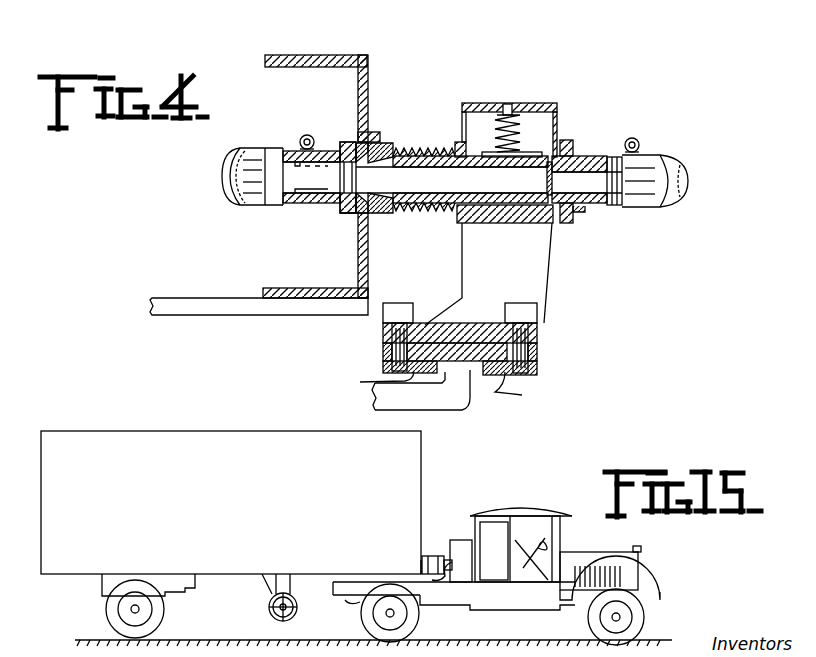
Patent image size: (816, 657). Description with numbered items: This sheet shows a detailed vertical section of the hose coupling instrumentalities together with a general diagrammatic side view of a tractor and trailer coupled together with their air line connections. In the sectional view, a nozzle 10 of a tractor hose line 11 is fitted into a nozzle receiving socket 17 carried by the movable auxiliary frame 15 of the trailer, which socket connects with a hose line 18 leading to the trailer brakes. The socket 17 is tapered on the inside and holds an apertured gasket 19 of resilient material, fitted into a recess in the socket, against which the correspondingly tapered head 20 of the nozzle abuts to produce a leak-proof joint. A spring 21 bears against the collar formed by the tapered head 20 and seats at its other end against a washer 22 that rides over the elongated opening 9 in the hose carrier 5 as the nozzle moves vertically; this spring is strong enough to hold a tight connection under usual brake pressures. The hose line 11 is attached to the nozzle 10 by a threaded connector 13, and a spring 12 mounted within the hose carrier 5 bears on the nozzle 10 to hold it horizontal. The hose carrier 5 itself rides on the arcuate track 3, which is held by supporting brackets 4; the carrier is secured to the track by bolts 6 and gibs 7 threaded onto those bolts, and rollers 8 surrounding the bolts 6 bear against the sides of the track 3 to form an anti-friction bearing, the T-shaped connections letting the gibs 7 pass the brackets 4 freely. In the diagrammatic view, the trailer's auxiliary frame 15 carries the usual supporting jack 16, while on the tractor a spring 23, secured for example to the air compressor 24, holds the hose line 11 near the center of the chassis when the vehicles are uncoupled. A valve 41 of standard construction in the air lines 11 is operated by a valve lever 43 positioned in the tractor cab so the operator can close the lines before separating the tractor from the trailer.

In FIG. 4, the arcuate track 3 is at (470, 345).
In FIG. 15, the arcuate track 3 is at (446, 560).
In FIG. 4, the supporting bracket 4 is at (462, 396).
In FIG. 4, the hose carrier 5 is at (543, 130).
In FIG. 15, the hose carrier 5 is at (422, 560).
In FIG. 4, the bolt 6 is at (383, 334).
In FIG. 4, the gib 7 is at (442, 389).
In FIG. 4, the roller 8 is at (383, 352).
In FIG. 4, the elongated opening 9 is at (533, 112).
In FIG. 4, the nozzle 10 is at (557, 160).
In FIG. 4, the hose line 11 is at (668, 166).
In FIG. 15, the hose line 11 is at (436, 549).
In FIG. 4, the spring 12 is at (470, 112).
In FIG. 4, the threaded connector 13 is at (590, 210).
In FIG. 4, the auxiliary frame 15 is at (362, 56).
In FIG. 15, the supporting jack 16 is at (263, 597).
In FIG. 4, the nozzle receiving socket 17 is at (374, 140).
In FIG. 4, the hose line 18 is at (245, 162).
In FIG. 4, the apertured gasket 19 is at (346, 206).
In FIG. 4, the tapered head 20 is at (386, 154).
In FIG. 4, the spring 21 is at (412, 212).
In FIG. 4, the washer 22 is at (446, 216).
In FIG. 15, the spring 23 is at (448, 540).
In FIG. 15, the air compressor 24 is at (470, 540).
In FIG. 15, the valve 41 is at (455, 600).
In FIG. 15, the valve lever 43 is at (553, 580).